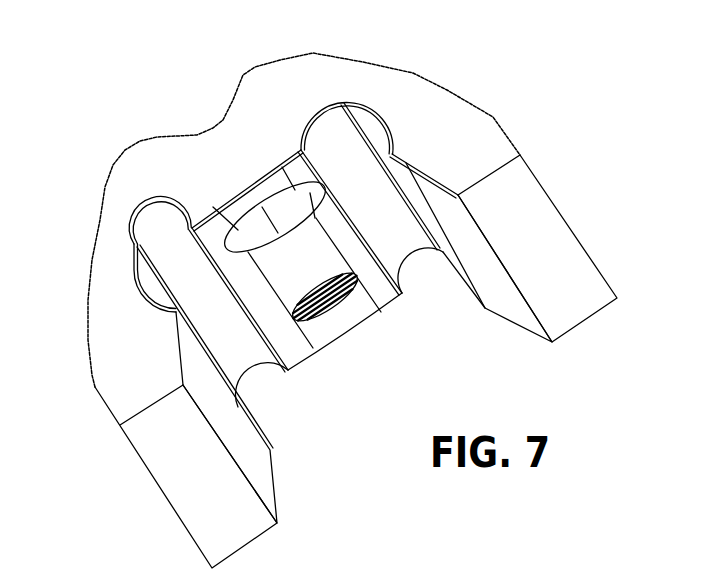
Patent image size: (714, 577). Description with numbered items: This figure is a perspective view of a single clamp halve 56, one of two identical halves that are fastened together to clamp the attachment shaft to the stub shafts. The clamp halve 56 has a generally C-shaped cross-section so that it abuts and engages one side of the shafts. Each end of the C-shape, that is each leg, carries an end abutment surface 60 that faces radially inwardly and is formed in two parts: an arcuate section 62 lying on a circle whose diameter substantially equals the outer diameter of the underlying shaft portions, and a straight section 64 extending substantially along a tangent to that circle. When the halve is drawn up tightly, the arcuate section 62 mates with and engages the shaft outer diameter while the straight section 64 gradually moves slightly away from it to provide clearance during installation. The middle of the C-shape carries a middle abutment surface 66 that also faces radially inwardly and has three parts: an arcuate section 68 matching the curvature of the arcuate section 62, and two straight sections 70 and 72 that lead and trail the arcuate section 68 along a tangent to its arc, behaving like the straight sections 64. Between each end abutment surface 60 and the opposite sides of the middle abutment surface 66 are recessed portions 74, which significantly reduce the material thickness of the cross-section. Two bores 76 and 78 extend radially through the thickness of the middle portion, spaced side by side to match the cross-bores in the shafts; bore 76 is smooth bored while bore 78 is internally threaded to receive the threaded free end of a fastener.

The clamp halve 56 is at (536, 152).
The end abutment surface 60 is at (356, 361).
The arcuate section 62 is at (247, 432).
The straight section 64 is at (238, 450).
The middle abutment surface 66 is at (248, 216).
The arcuate section 68 is at (247, 205).
The straight section 70 is at (210, 227).
The straight section 72 is at (298, 173).
The recessed portion 74 is at (140, 232).
The bore 76 is at (316, 181).
The bore 78 is at (357, 276).